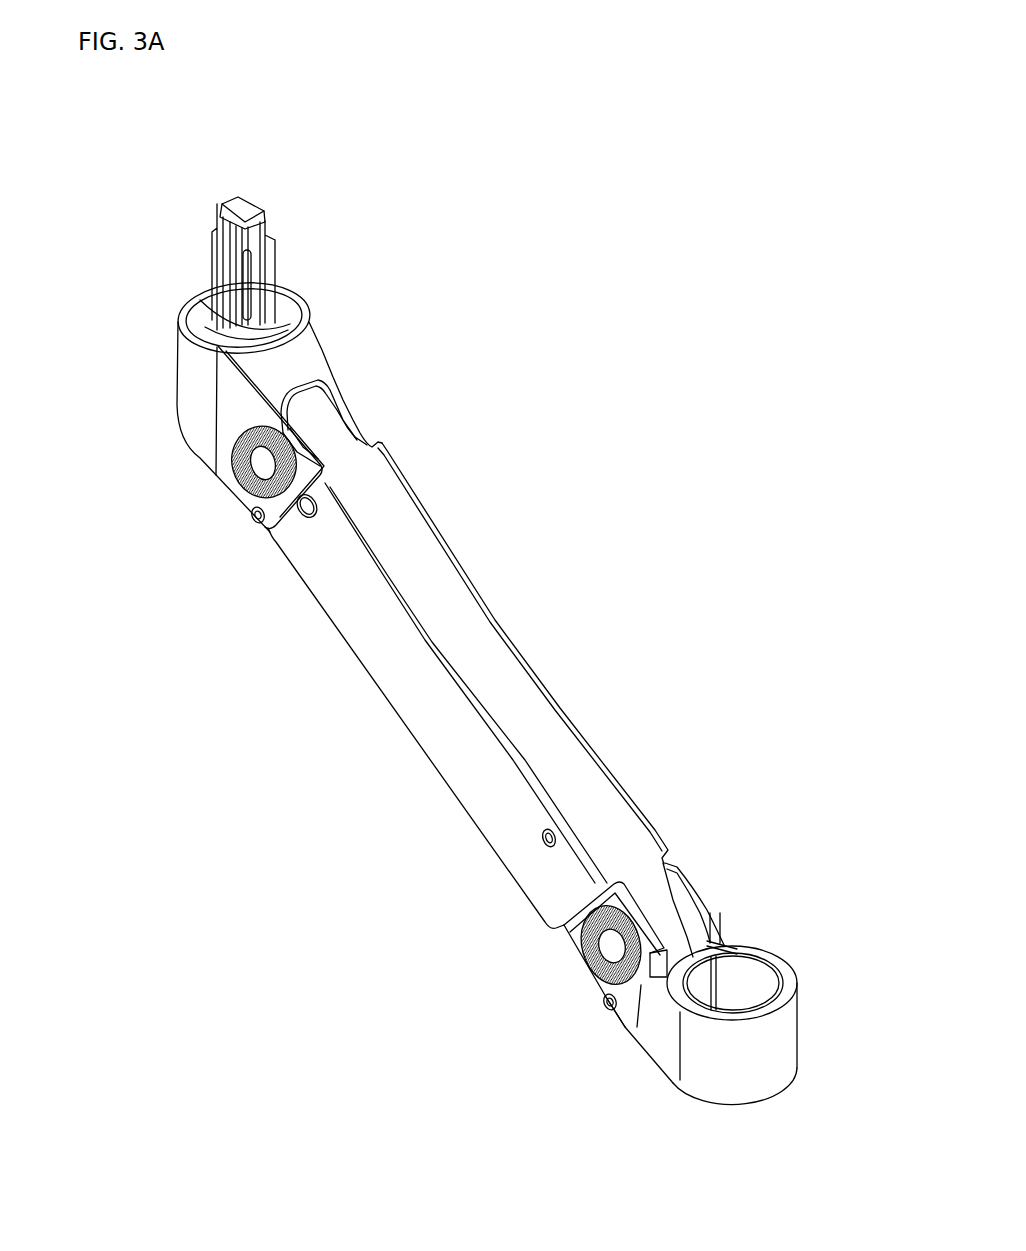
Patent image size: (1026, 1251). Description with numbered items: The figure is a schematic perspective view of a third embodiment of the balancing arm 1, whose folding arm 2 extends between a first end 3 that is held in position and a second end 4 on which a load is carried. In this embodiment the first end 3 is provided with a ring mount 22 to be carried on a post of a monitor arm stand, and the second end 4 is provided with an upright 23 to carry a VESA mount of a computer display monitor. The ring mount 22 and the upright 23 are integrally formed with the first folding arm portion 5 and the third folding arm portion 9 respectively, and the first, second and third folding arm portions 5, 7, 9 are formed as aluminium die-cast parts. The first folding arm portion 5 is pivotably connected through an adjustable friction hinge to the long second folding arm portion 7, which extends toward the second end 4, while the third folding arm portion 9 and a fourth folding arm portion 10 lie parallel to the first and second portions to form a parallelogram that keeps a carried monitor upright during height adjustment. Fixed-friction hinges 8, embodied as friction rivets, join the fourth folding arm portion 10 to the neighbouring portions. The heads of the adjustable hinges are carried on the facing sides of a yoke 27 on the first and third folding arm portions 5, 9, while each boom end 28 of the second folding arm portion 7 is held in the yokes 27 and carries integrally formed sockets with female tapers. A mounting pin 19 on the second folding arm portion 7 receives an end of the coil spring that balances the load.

The balancing arm 1 is at (466, 661).
The folding arm 2 is at (631, 868).
The first end 3 is at (701, 1046).
The second end 4 is at (153, 345).
The first folding arm portion 5 is at (655, 1025).
The second folding arm portion 7 is at (483, 652).
The further friction hinge 8 is at (251, 517).
The third folding arm portion 9 is at (208, 424).
The fourth folding arm portion 10 is at (573, 927).
The mounting pin 19 is at (543, 840).
The ring mount 22 is at (733, 983).
The upright 23 is at (267, 232).
The yoke 27 is at (330, 391).
The boom end 28 is at (317, 420).